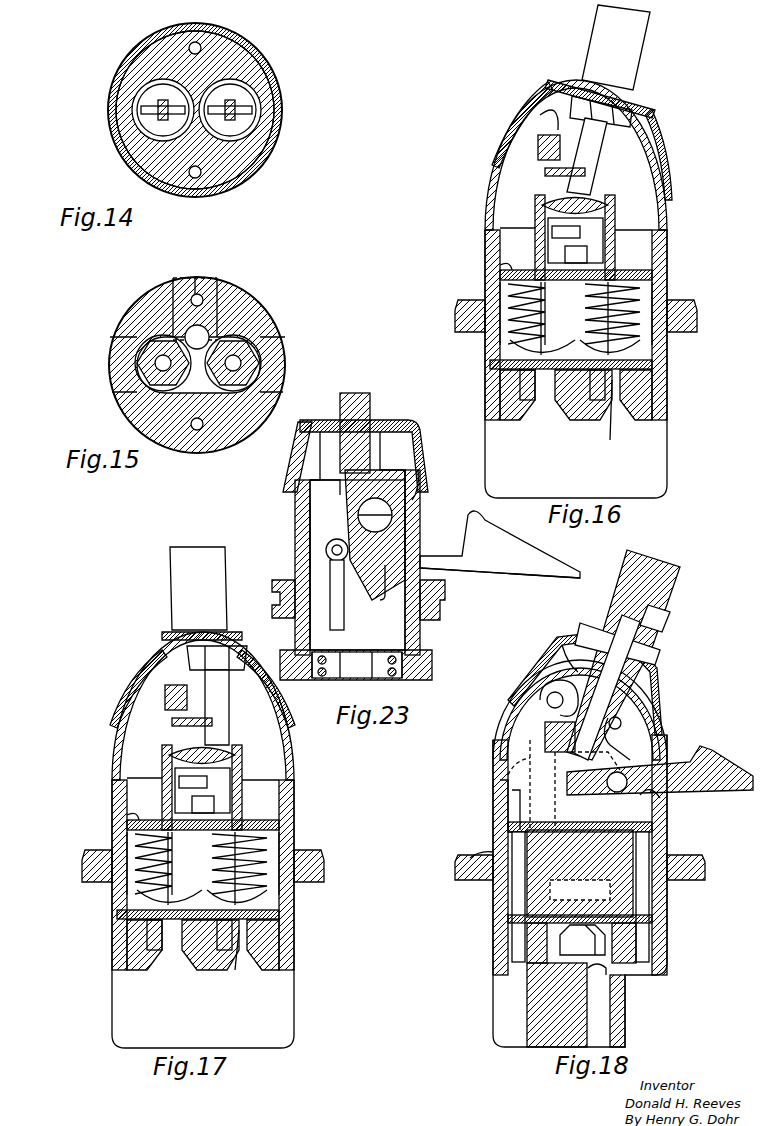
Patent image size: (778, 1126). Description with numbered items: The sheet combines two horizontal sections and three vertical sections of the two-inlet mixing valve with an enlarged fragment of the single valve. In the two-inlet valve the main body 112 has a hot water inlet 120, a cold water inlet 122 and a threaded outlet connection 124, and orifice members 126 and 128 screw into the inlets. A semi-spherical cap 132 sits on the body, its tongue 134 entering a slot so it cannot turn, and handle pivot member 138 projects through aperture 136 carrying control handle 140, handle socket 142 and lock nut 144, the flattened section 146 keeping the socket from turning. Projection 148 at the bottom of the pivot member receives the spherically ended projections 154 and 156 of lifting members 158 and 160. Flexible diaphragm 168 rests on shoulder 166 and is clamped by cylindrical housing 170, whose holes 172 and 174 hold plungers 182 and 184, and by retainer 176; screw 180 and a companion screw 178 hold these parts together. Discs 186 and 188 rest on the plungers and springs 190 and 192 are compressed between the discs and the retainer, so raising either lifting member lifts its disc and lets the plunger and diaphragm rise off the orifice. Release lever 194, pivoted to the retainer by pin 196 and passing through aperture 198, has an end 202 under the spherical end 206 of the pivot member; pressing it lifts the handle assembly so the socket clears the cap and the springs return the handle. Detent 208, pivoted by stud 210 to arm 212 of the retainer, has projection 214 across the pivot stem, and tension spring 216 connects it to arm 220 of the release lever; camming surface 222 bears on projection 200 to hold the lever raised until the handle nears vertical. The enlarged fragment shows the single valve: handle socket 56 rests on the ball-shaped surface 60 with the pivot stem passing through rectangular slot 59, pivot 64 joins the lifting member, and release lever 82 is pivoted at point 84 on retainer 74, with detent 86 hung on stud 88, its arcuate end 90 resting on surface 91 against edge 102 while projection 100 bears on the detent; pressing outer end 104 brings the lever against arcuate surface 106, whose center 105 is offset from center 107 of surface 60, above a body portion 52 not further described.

In FIG. 23, the housing body 52 is at (432, 615).
In FIG. 23, the handle socket 56 is at (420, 440).
In FIG. 23, the rectangular slot 59 is at (328, 468).
In FIG. 23, the ball-shaped upper portion 60 is at (424, 487).
In FIG. 23, the stud or pivot 64 is at (394, 512).
In FIG. 23, the retaining member 74 is at (310, 553).
In FIG. 23, the release lever 82 is at (488, 530).
In FIG. 23, the pivot point 84 is at (445, 590).
In FIG. 23, the detent 86 is at (344, 612).
In FIG. 23, the stud 88 is at (337, 561).
In FIG. 23, the lower end of detent 90 is at (330, 678).
In FIG. 23, the surface of retainer 91 is at (365, 678).
In FIG. 23, the projection 100 is at (386, 585).
In FIG. 23, the edge of opening 102 is at (312, 628).
In FIG. 23, the outer end of release lever 104 is at (528, 578).
In FIG. 23, the center of arcuate surface 105 is at (392, 520).
In FIG. 23, the arcuate surface 106 is at (312, 528).
In FIG. 23, the center of spherical segmental surface 107 is at (300, 470).
In FIG. 14, the main body 112 is at (268, 160).
In FIG. 15, the main body 112 is at (200, 444).
In FIG. 16, the main body 112 is at (690, 312).
In FIG. 17, the main body 112 is at (218, 914).
In FIG. 18, the main body 112 is at (700, 862).
In FIG. 15, the inlet 120 is at (112, 358).
In FIG. 15, the inlet 122 is at (283, 356).
In FIG. 15, the outlet connection 124 is at (197, 290).
In FIG. 15, the orifice member 126 is at (150, 393).
In FIG. 16, the orifice member 126 is at (490, 400).
In FIG. 17, the orifice member 126 is at (105, 945).
In FIG. 15, the orifice member 128 is at (248, 372).
In FIG. 16, the orifice member 128 is at (667, 402).
In FIG. 17, the orifice member 128 is at (258, 945).
In FIG. 16, the semi-spherical cap 132 is at (662, 140).
In FIG. 17, the semi-spherical cap 132 is at (187, 706).
In FIG. 18, the semi-spherical cap 132 is at (655, 690).
In FIG. 18, the tongue 134 is at (508, 812).
In FIG. 16, the aperture 136 is at (545, 110).
In FIG. 18, the aperture 136 is at (575, 634).
In FIG. 16, the handle pivot member 138 is at (600, 160).
In FIG. 17, the handle pivot member 138 is at (218, 707).
In FIG. 18, the handle pivot member 138 is at (640, 668).
In FIG. 16, the control handle 140 is at (638, 58).
In FIG. 17, the control handle 140 is at (170, 588).
In FIG. 18, the control handle 140 is at (665, 583).
In FIG. 16, the handle socket 142 is at (660, 118).
In FIG. 17, the handle socket 142 is at (178, 689).
In FIG. 18, the handle socket 142 is at (538, 664).
In FIG. 16, the lock nut 144 is at (640, 108).
In FIG. 17, the lock nut 144 is at (174, 641).
In FIG. 18, the lock nut 144 is at (598, 628).
In FIG. 18, the flattened section 146 is at (666, 620).
In FIG. 16, the projection 148 is at (545, 215).
In FIG. 17, the projection 148 is at (212, 779).
In FIG. 18, the projection 148 is at (545, 735).
In FIG. 16, the spherically ended projection 154 is at (598, 203).
In FIG. 17, the spherically ended projection 154 is at (202, 756).
In FIG. 16, the spherically ended projection 156 is at (555, 192).
In FIG. 17, the spherically ended projection 156 is at (179, 713).
In FIG. 16, the lifting member 158 is at (616, 244).
In FIG. 17, the lifting member 158 is at (257, 763).
In FIG. 16, the lifting member 160 is at (548, 239).
In FIG. 17, the lifting member 160 is at (167, 785).
In FIG. 16, the shoulder 166 is at (500, 375).
In FIG. 17, the shoulder 166 is at (238, 932).
In FIG. 18, the shoulder 166 is at (667, 925).
In FIG. 16, the flexible diaphragm 168 is at (610, 440).
In FIG. 17, the flexible diaphragm 168 is at (220, 963).
In FIG. 18, the flexible diaphragm 168 is at (630, 972).
In FIG. 14, the cylindrical housing 170 is at (265, 62).
In FIG. 15, the cylindrical housing 170 is at (258, 310).
In FIG. 16, the cylindrical housing 170 is at (665, 275).
In FIG. 17, the cylindrical housing 170 is at (228, 830).
In FIG. 18, the cylindrical housing 170 is at (668, 828).
In FIG. 14, the cylindrical hole 172 is at (264, 118).
In FIG. 16, the cylindrical hole 172 is at (680, 296).
In FIG. 17, the cylindrical hole 172 is at (290, 860).
In FIG. 14, the cylindrical hole 174 is at (140, 125).
In FIG. 16, the cylindrical hole 174 is at (500, 300).
In FIG. 17, the cylindrical hole 174 is at (110, 856).
In FIG. 16, the retainer 176 is at (500, 268).
In FIG. 17, the retainer 176 is at (228, 800).
In FIG. 18, the retainer 176 is at (527, 836).
In FIG. 18, the left bolt 178 is at (512, 905).
In FIG. 18, the screw 180 is at (650, 898).
In FIG. 16, the plunger 182 is at (657, 366).
In FIG. 17, the plunger 182 is at (218, 908).
In FIG. 18, the plunger 182 is at (580, 919).
In FIG. 16, the plunger 184 is at (500, 350).
In FIG. 17, the plunger 184 is at (125, 875).
In FIG. 16, the disc 186 is at (655, 350).
In FIG. 17, the disc 186 is at (264, 868).
In FIG. 16, the disc 188 is at (500, 340).
In FIG. 17, the disc 188 is at (110, 866).
In FIG. 14, the spring 190 is at (262, 100).
In FIG. 16, the spring 190 is at (630, 332).
In FIG. 17, the spring 190 is at (306, 849).
In FIG. 14, the spring 192 is at (133, 88).
In FIG. 16, the spring 192 is at (485, 305).
In FIG. 17, the spring 192 is at (89, 863).
In FIG. 18, the release lever 194 is at (712, 760).
In FIG. 18, the pin 196 is at (660, 808).
In FIG. 18, the aperture 198 is at (628, 790).
In FIG. 16, the projection 200 is at (488, 228).
In FIG. 17, the projection 200 is at (109, 788).
In FIG. 18, the end of release lever 202 is at (500, 780).
In FIG. 18, the partially spherical end 206 is at (530, 785).
In FIG. 18, the detent 208 is at (485, 760).
In FIG. 18, the stud 210 is at (547, 700).
In FIG. 18, the arm 212 is at (512, 792).
In FIG. 18, the projection 214 is at (470, 856).
In FIG. 18, the tension spring 216 is at (622, 720).
In FIG. 18, the arm 220 is at (635, 745).
In FIG. 18, the camming surface 222 is at (601, 756).